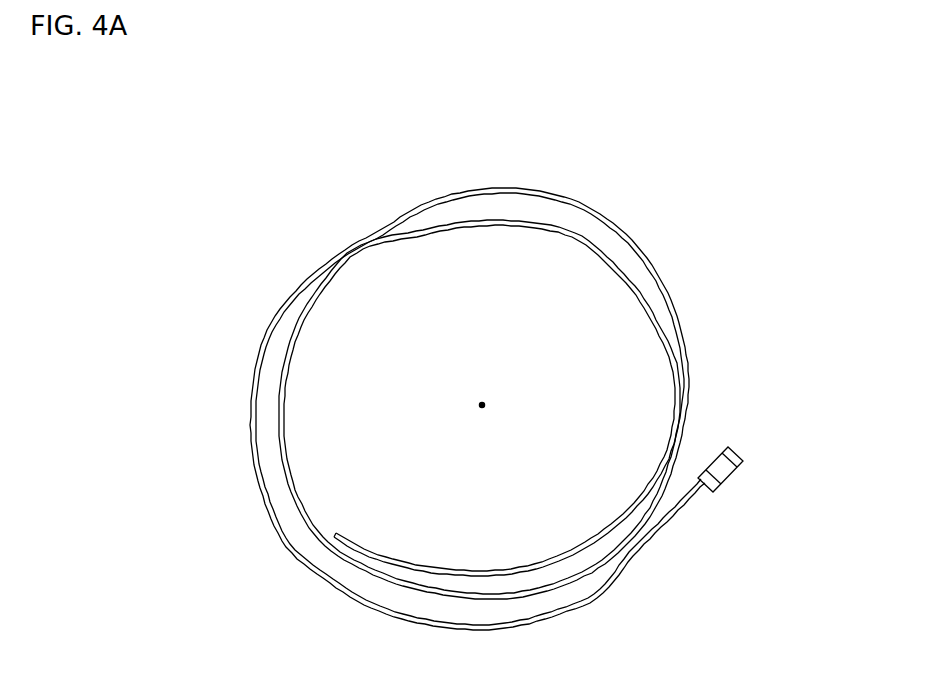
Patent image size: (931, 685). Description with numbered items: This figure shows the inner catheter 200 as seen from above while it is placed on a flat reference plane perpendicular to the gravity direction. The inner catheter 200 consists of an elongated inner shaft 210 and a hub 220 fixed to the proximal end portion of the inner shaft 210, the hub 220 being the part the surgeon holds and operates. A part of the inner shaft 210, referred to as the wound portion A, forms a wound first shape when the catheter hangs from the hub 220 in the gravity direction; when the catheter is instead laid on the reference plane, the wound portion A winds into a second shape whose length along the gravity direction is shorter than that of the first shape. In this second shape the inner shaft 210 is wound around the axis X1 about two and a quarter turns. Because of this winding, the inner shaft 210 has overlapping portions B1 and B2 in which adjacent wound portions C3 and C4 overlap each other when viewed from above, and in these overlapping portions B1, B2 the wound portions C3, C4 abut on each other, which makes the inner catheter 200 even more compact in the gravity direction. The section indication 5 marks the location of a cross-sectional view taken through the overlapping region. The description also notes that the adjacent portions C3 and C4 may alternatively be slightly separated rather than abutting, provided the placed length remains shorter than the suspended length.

The inner catheter 200 is at (171, 141).
The inner shaft 210 is at (291, 307).
The hub 220 is at (737, 477).
The section line 5 is at (537, 376).
The wound portion C3 is at (383, 248).
The wound portion C4 is at (330, 279).
The overlapping portion B1 is at (373, 268).
The overlapping portion B2 is at (663, 437).
The axis X1 is at (505, 409).
The wound portion A is at (285, 546).